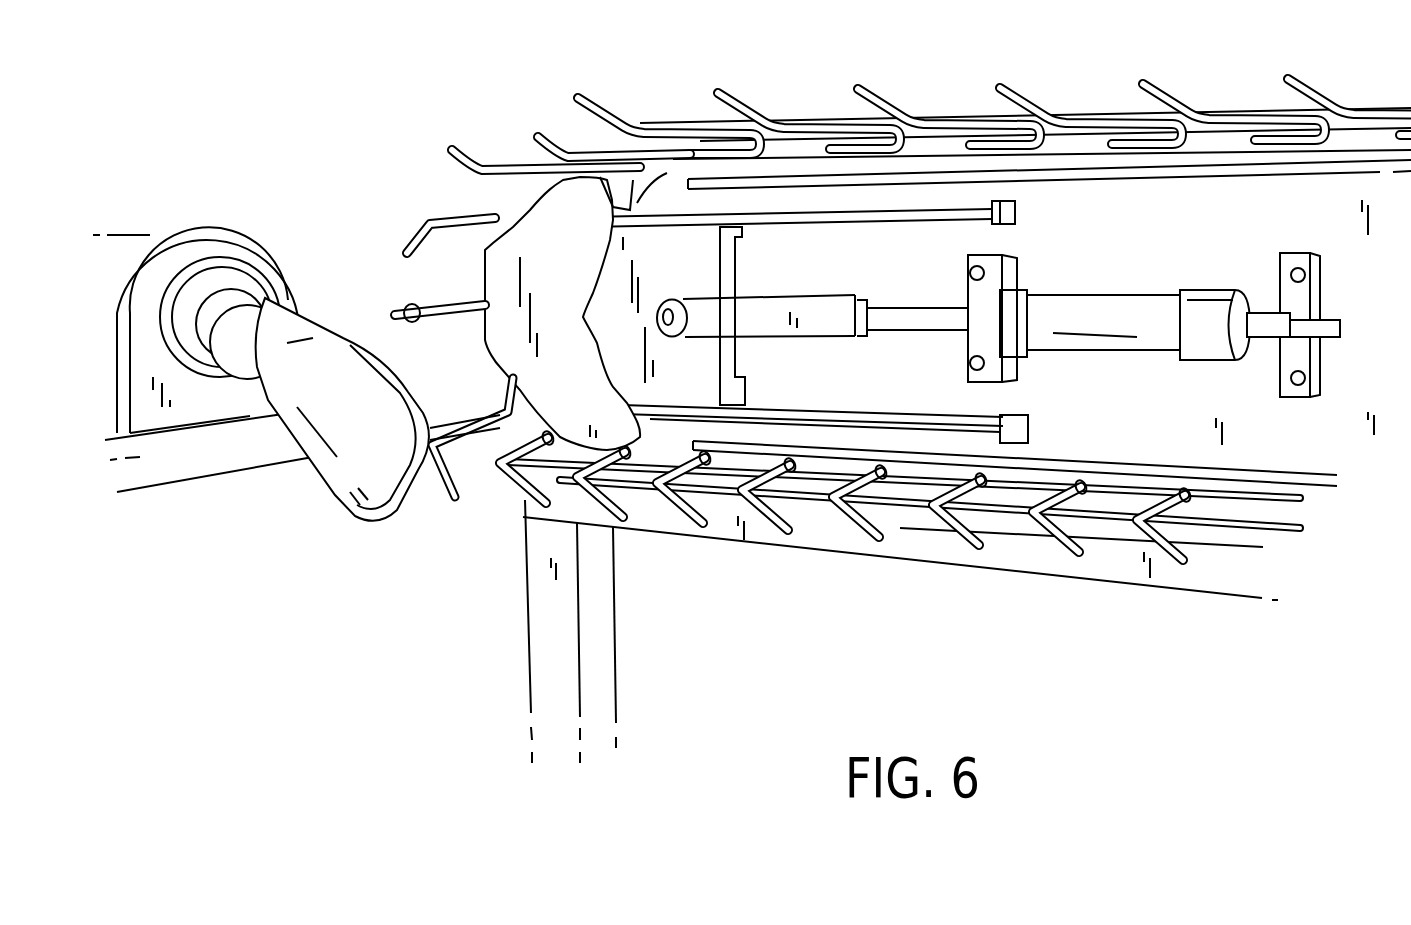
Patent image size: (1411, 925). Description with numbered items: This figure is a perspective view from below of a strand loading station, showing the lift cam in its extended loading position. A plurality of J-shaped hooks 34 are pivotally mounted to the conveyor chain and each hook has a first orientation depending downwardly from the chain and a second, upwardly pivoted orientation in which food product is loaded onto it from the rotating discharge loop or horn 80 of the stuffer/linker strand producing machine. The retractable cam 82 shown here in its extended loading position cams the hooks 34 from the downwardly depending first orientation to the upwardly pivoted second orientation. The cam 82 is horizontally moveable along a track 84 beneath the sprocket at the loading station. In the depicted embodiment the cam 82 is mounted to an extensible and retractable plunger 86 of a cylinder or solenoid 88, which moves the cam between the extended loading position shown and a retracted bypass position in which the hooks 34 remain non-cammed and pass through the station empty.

The J-shaped hook 34 is at (402, 307).
The rotating discharge loop or horn 80 is at (387, 503).
The retractable cam 82 is at (500, 337).
The track 84 is at (576, 311).
The plunger 86 is at (902, 313).
The cylinder or solenoid 88 is at (1103, 313).